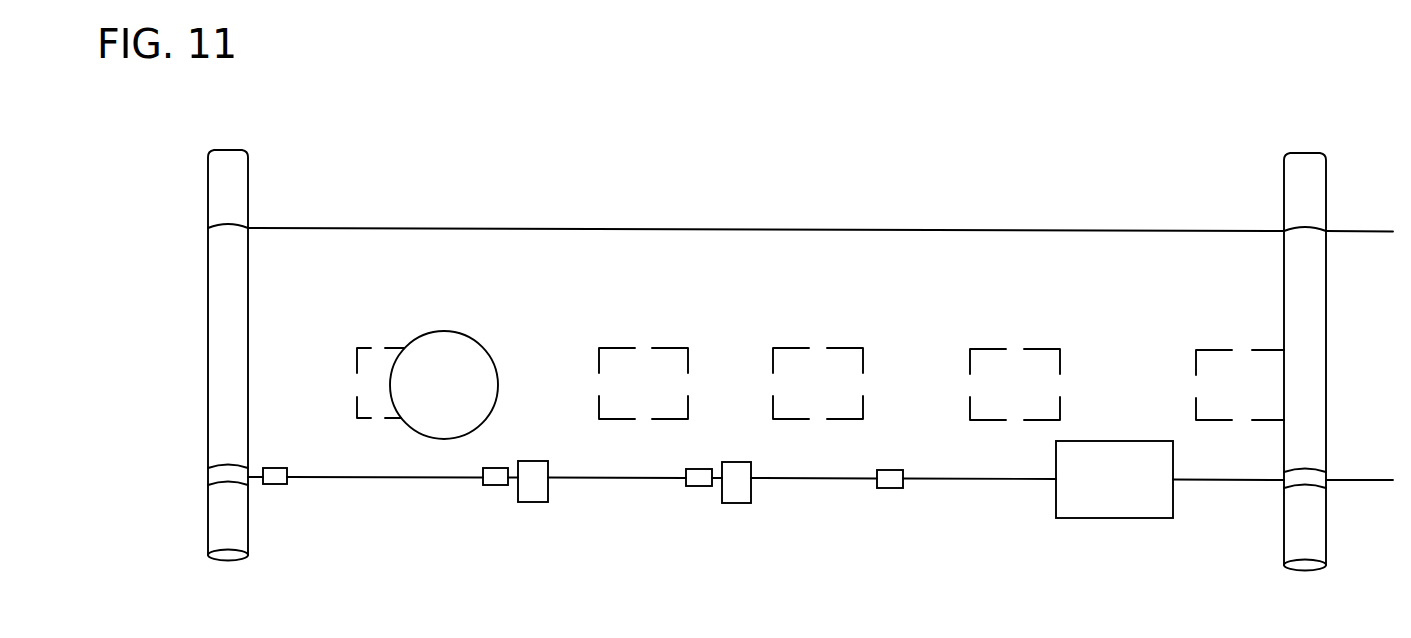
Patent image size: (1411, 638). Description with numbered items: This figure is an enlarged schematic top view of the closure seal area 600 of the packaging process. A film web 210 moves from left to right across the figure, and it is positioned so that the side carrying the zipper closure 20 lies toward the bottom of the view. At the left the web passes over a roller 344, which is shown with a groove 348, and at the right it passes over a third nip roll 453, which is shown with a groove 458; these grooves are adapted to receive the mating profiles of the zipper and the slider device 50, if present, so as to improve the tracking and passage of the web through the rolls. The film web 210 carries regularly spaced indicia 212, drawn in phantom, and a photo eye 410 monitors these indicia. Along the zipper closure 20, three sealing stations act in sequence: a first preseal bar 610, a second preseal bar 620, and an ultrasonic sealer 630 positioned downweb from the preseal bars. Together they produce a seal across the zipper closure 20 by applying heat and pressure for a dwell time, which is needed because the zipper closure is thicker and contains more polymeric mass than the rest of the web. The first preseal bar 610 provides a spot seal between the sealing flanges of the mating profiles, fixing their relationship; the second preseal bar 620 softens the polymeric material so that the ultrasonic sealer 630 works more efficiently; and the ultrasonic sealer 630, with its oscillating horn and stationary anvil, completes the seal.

The closure seal area 600 is at (816, 193).
The roller 344 is at (208, 152).
The groove 348 is at (228, 481).
The third nip roll 453 is at (1284, 158).
The groove 458 is at (1305, 485).
The film web 210 is at (418, 228).
The zipper closure 20 is at (815, 480).
The slider device 50 is at (276, 486).
The photo eye 410 is at (430, 435).
The indicia 212 is at (618, 420).
The first preseal bar 610 is at (520, 501).
The second preseal bar 620 is at (725, 502).
The ultrasonic sealer 630 is at (1150, 518).